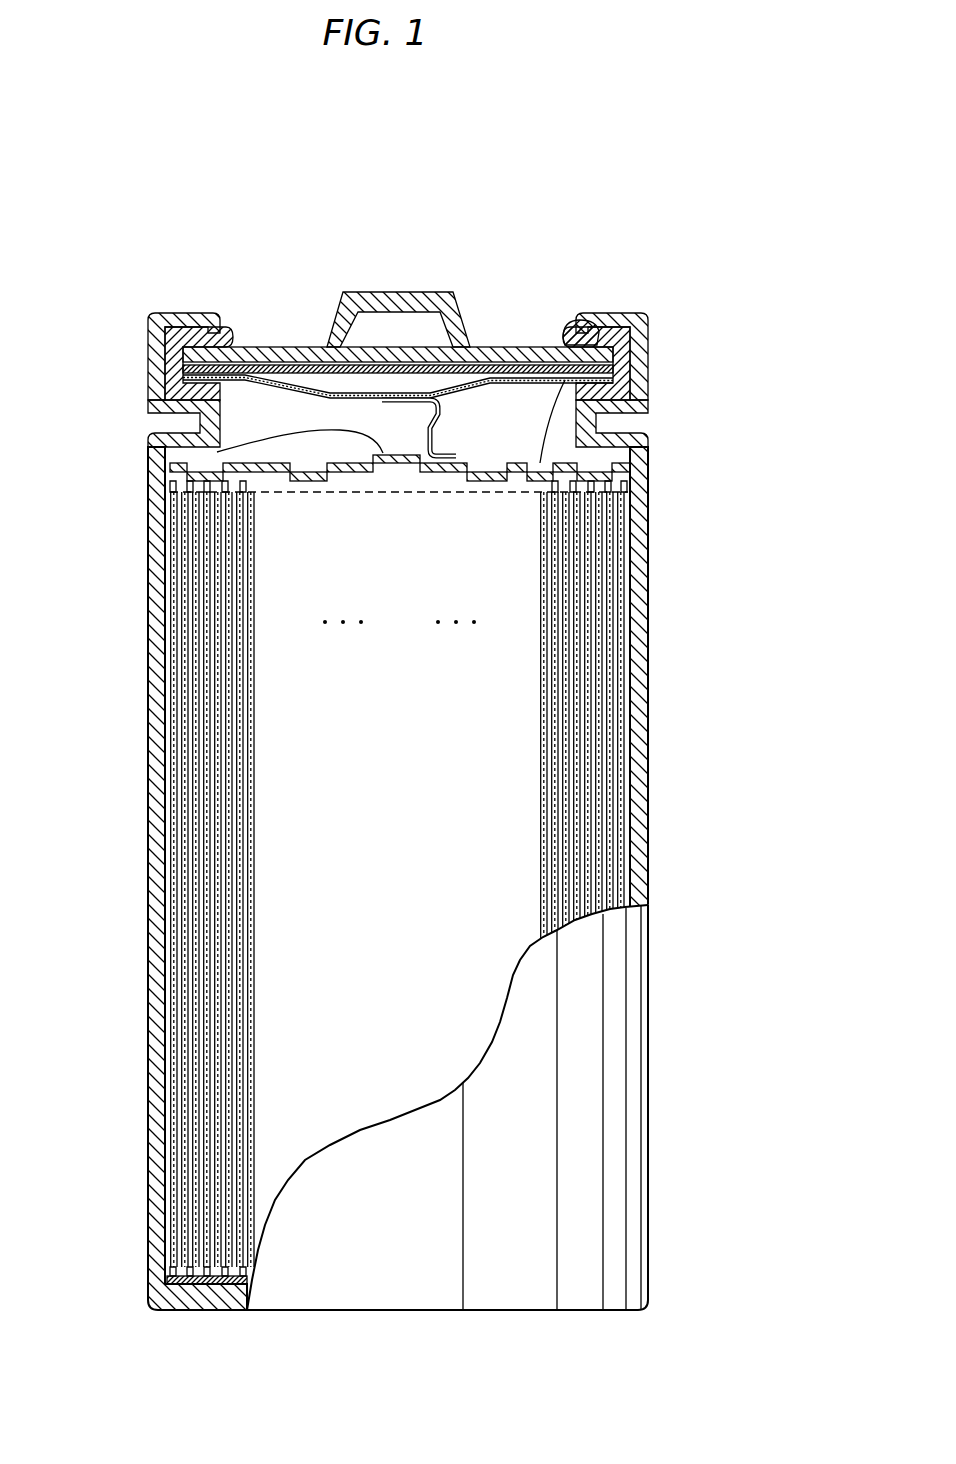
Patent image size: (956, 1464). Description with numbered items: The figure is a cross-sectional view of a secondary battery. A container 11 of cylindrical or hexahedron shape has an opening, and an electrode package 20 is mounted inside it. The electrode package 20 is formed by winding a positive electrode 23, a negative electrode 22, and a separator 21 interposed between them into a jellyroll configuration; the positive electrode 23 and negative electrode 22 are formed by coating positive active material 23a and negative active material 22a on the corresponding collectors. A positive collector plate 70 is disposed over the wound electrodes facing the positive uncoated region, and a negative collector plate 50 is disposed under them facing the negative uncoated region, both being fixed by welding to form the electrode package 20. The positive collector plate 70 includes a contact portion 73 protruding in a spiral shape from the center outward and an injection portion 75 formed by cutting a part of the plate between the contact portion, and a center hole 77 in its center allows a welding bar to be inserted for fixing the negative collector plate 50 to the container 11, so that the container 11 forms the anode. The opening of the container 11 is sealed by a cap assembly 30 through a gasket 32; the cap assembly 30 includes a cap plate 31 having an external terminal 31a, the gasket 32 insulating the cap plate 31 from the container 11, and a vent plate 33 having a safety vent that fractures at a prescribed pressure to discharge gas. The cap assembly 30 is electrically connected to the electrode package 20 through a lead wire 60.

The container 11 is at (648, 676).
The electrode package 20 is at (515, 790).
The separator 21 is at (213, 772).
The negative electrode 22 is at (178, 1200).
The negative active material 22a is at (170, 1276).
The positive electrode 23 is at (181, 596).
The positive active material 23a is at (176, 485).
The cap assembly 30 is at (398, 339).
The cap plate 31 is at (318, 350).
The external terminal 31a is at (421, 296).
The gasket 32 is at (176, 313).
The vent plate 33 is at (236, 345).
The negative collector plate 50 is at (193, 1293).
The lead wire 60 is at (441, 431).
The positive collector plate 70 is at (622, 462).
The contact portion 73 is at (595, 466).
The injection portion 75 is at (589, 320).
The center hole 77 is at (163, 440).